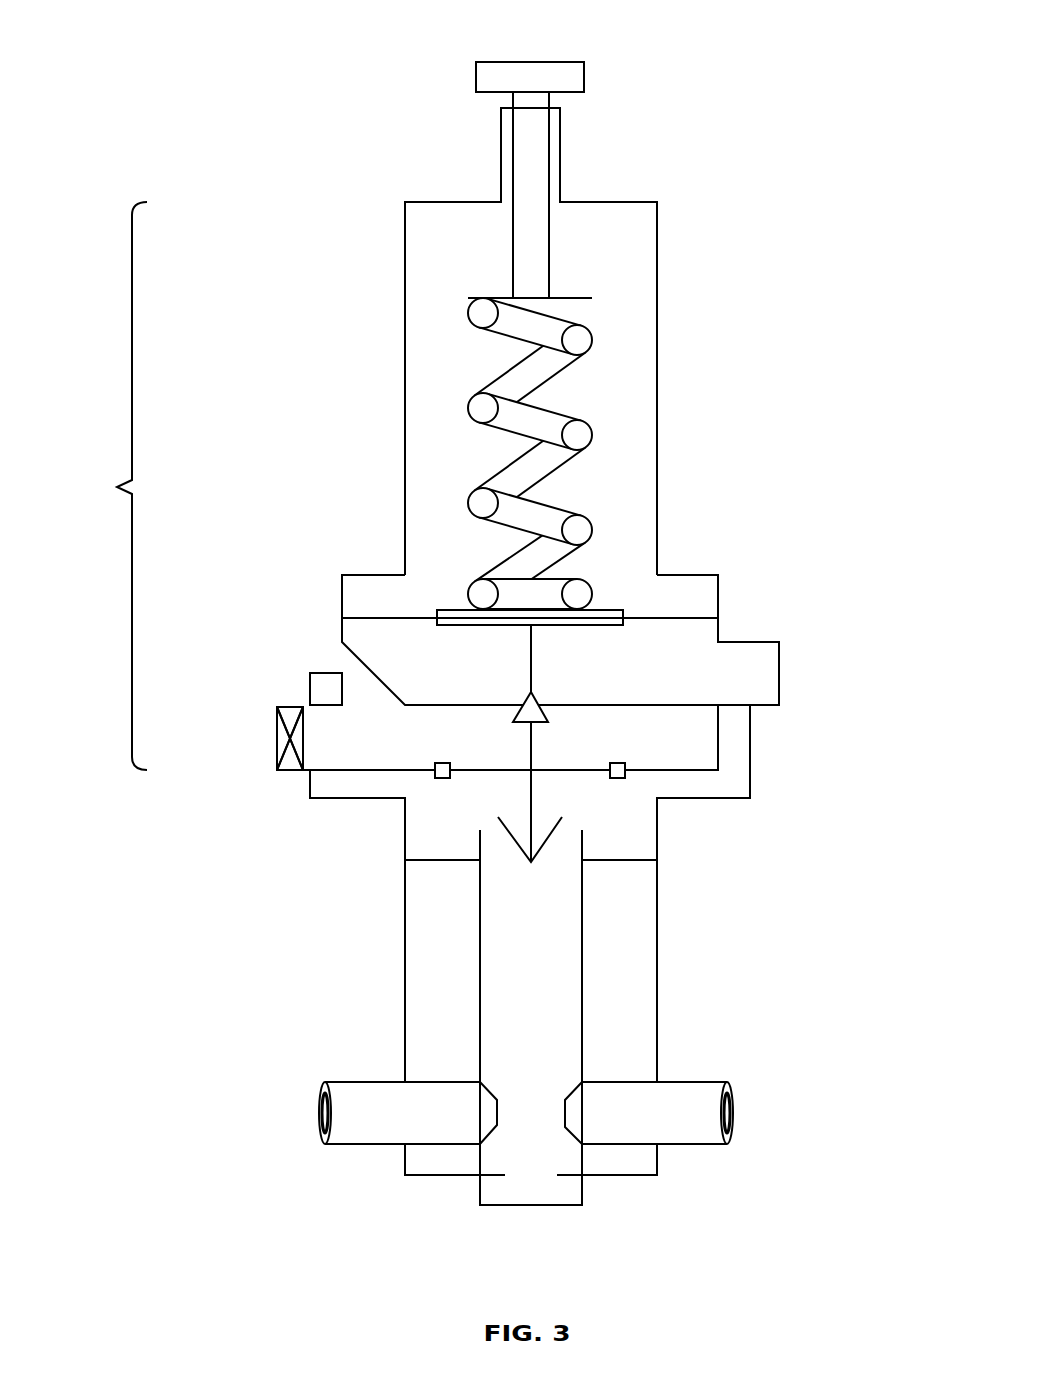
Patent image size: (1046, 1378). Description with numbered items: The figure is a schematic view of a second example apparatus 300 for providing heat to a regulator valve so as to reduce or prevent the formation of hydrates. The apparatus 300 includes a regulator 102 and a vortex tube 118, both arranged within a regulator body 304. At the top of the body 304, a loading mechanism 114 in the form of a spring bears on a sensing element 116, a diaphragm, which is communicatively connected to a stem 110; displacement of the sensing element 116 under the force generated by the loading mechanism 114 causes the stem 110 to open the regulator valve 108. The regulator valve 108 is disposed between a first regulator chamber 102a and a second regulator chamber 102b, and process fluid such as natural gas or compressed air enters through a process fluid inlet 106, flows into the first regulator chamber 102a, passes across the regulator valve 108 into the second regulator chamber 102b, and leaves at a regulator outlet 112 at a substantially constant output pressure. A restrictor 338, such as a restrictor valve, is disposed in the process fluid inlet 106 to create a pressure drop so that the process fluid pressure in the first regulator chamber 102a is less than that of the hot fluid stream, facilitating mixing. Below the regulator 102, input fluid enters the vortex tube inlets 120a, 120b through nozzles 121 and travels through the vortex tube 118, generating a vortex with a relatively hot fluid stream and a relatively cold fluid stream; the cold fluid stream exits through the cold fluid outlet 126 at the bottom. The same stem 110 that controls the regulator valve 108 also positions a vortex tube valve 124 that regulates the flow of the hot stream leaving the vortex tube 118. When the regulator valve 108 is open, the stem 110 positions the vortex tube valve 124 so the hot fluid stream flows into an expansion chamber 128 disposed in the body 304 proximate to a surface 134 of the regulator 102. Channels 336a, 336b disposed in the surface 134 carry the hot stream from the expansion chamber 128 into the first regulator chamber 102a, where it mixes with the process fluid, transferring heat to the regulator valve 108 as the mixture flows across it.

The apparatus 300 is at (250, 45).
The regulator 102 is at (420, 688).
The regulator body 304 is at (400, 200).
The loading mechanism 114 is at (634, 297).
The sensing element 116 is at (600, 608).
The stem 110 is at (532, 650).
The regulator valve 108 is at (548, 713).
The vortex tube valve 124 is at (560, 823).
The first regulator chamber 102a is at (337, 718).
The process fluid inlet 106 is at (277, 738).
The restrictor 338 is at (277, 748).
The surface 134 is at (370, 778).
The channel 336a is at (443, 762).
The channel 336b is at (620, 762).
The second regulator chamber 102b is at (768, 662).
The regulator outlet 112 is at (780, 673).
The expansion chamber 128 is at (618, 803).
The vortex tube 118 is at (545, 1063).
The cold fluid outlet 126 is at (522, 1207).
The vortex tube inlet 120a is at (318, 1090).
The vortex tube inlet 120b is at (728, 1088).
The nozzle 121 is at (318, 1128).